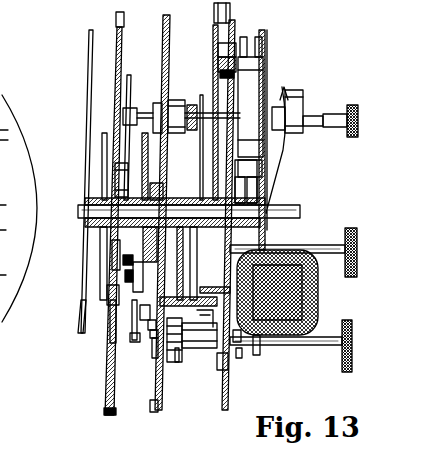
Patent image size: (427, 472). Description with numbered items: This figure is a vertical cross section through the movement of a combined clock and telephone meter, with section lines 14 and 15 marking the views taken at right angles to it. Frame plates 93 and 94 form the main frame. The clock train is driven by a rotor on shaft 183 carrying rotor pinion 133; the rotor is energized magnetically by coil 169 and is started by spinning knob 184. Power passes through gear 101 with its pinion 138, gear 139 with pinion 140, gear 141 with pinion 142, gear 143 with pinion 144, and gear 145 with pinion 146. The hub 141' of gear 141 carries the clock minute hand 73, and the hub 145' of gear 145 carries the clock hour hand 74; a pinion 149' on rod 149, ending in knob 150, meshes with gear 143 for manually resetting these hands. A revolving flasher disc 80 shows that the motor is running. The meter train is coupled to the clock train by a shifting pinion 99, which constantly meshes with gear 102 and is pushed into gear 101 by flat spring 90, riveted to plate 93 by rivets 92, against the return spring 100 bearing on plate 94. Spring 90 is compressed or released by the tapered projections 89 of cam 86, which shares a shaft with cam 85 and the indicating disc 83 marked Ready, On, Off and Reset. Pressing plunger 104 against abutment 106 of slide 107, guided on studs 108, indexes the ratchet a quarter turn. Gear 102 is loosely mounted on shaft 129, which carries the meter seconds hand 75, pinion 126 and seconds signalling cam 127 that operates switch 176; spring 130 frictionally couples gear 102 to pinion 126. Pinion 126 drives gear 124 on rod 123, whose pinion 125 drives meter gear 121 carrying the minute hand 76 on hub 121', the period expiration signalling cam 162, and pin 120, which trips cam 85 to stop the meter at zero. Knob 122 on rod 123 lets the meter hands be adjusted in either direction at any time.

The section line 14 is at (165, 15).
The section line 15 is at (222, 18).
The clock minute hand 73 is at (90, 46).
The clock hour hand 74 is at (80, 312).
The meter seconds hand 75 is at (108, 338).
The meter minute hand 76 is at (104, 135).
The flasher disc 80 is at (117, 82).
The indicating disc 83 is at (132, 340).
The cam 85 is at (113, 356).
The cam 86 is at (150, 318).
The tapered projections 89 is at (155, 325).
The flat spring 90 is at (156, 330).
The rivets 92 is at (158, 340).
The frame plate 93 is at (153, 411).
The frame plate 94 is at (232, 396).
The shifting pinion 99 is at (240, 355).
The spring 100 is at (236, 340).
The gear 101 is at (230, 115).
The gear 102 is at (205, 118).
The plunger 104 is at (231, 14).
The right angular abutment 106 is at (230, 45).
The slide 107 is at (236, 60).
The studs 108 is at (236, 70).
The pin 120 is at (130, 278).
The meter gear 121 is at (74, 306).
The hub 121' is at (99, 244).
The knob 122 is at (356, 235).
The rod 123 is at (306, 246).
The gear 124 is at (236, 240).
The pinion 125 is at (118, 258).
The pinion 126 is at (270, 163).
The seconds signalling cam 127 is at (235, 250).
The shaft 129 is at (78, 211).
The spring 130 is at (218, 345).
The rotor pinion 133 is at (190, 108).
The pinion 138 is at (240, 237).
The gear 139 is at (230, 80).
The pinion 140 is at (160, 160).
The gear 141 is at (99, 137).
The hub 141' is at (104, 188).
The pinion 142 is at (250, 185).
The gear 143 is at (238, 244).
The pinion 144 is at (125, 268).
The gear 145 is at (89, 287).
The hub 145' is at (73, 261).
The pinion 146 is at (143, 168).
The rod 149 is at (286, 351).
The pinion 149' is at (177, 382).
The knob 150 is at (352, 331).
The period expiration signalling cam 162 is at (113, 183).
The coil 169 is at (318, 296).
The switch 176 is at (218, 112).
The rotor shaft 183 is at (312, 120).
The knob 184 is at (357, 122).